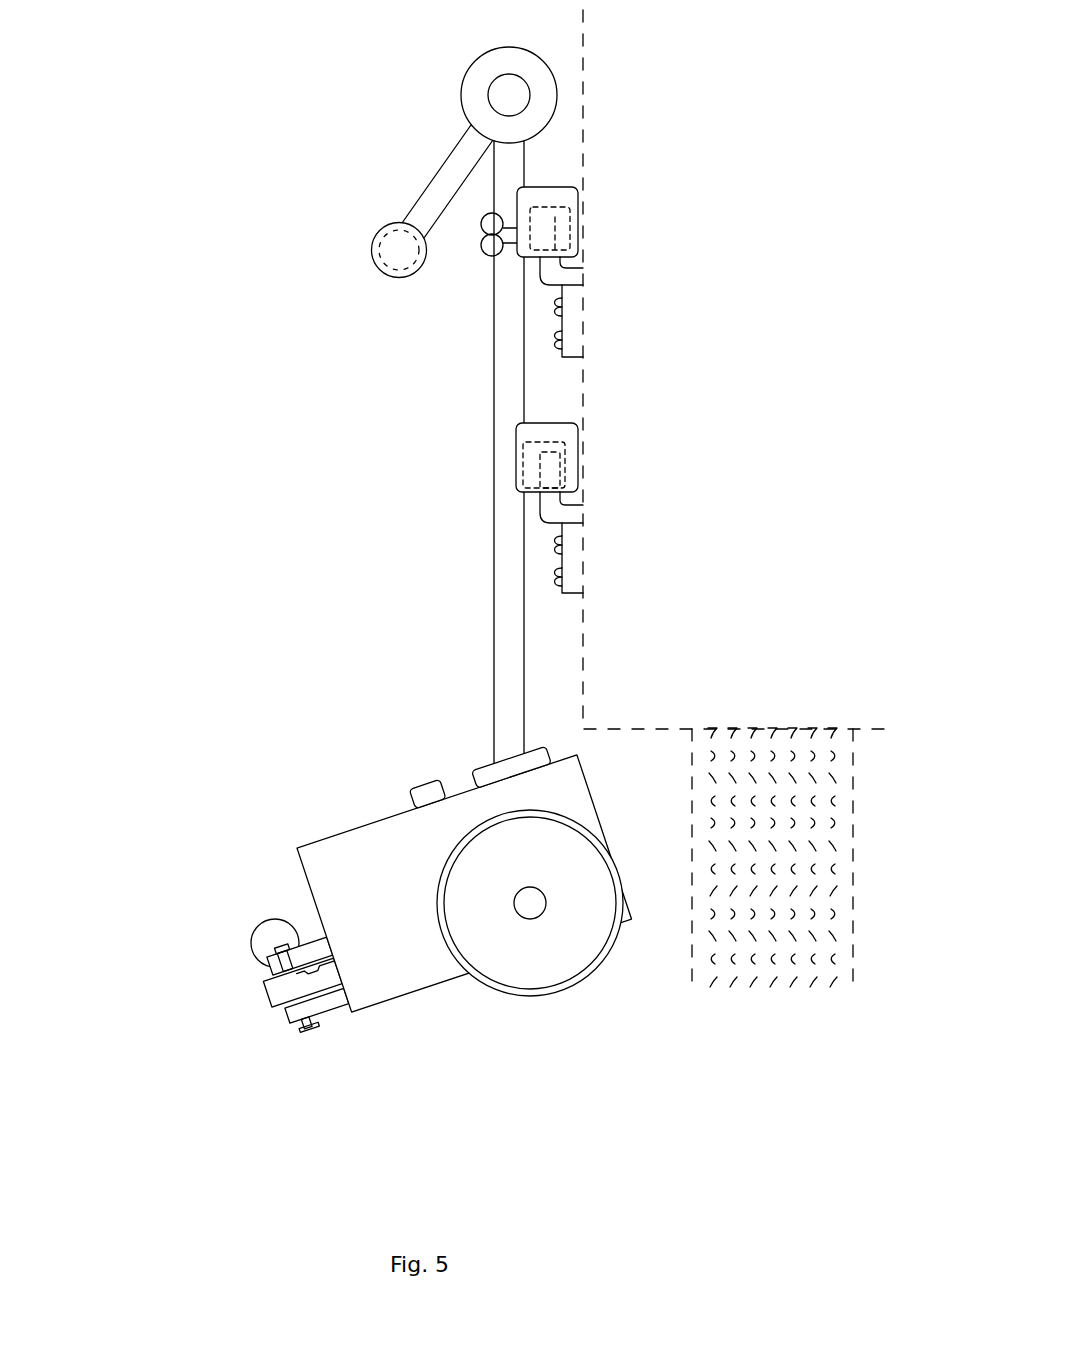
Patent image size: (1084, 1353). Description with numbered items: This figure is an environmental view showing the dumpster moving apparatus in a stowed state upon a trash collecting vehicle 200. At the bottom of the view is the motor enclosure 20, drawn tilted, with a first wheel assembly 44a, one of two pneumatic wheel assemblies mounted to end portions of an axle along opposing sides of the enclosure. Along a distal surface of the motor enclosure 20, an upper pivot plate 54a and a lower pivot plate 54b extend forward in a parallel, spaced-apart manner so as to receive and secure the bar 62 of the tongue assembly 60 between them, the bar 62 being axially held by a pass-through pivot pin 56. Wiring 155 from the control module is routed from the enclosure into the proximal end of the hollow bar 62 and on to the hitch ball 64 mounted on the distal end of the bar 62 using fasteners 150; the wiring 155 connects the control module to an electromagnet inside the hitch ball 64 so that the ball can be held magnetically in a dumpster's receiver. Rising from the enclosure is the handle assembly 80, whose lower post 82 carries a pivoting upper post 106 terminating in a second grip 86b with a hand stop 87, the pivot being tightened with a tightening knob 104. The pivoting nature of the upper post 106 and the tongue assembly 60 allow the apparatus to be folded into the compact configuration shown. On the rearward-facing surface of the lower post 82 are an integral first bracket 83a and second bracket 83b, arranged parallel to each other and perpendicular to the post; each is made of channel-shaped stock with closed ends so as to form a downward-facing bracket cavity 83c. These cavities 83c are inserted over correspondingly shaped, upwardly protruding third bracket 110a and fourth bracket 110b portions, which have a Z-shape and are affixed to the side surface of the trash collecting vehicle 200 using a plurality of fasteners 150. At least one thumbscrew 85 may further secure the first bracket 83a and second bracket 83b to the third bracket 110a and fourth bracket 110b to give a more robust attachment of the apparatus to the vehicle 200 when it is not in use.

The motor enclosure 20 is at (371, 917).
The first wheel assembly 44a is at (462, 842).
The upper pivot plate 54a is at (268, 861).
The lower pivot plate 54b is at (330, 998).
The pivot pin 56 is at (317, 1005).
The tongue assembly 60 is at (232, 893).
The bar 62 is at (302, 982).
The hitch ball 64 is at (253, 952).
The handle assembly 80 is at (456, 405).
The lower post 82 is at (496, 420).
The first bracket 83a is at (573, 452).
The second bracket 83b is at (580, 213).
The bracket cavity 83c is at (573, 233).
The thumbscrew 85 is at (487, 255).
The second grip 86b is at (377, 238).
The hand stop 87 is at (372, 262).
The tightening knob 104 is at (557, 93).
The upper post 106 is at (435, 185).
The third bracket 110a is at (545, 272).
The fourth bracket 110b is at (543, 513).
The fastener 150 is at (555, 343).
The wiring 155 is at (308, 1024).
The trash collecting vehicle 200 is at (788, 780).